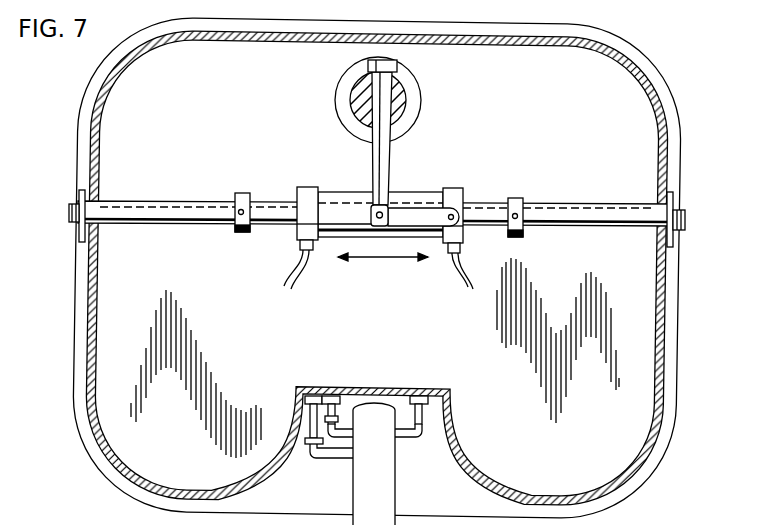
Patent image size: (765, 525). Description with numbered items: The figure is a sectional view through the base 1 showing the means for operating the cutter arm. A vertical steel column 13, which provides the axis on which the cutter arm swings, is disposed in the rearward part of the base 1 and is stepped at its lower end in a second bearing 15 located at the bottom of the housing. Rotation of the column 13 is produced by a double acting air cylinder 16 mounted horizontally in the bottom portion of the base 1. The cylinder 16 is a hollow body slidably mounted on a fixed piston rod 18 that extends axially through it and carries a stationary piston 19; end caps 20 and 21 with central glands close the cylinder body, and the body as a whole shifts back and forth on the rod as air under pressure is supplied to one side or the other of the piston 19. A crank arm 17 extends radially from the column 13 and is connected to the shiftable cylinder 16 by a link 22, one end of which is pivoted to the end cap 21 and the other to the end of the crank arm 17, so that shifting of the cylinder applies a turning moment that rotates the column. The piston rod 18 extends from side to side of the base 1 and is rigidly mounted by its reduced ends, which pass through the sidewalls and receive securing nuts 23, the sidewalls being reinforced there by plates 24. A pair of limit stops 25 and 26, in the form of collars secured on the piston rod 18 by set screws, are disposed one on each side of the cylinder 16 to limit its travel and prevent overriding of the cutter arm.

The base 1 is at (665, 336).
The column 13 is at (405, 100).
The second bearing 15 is at (420, 111).
The air cylinder 16 is at (428, 192).
The crank arm 17 is at (389, 158).
The piston rod 18 is at (548, 208).
The piston 19 is at (370, 200).
The end cap 20 is at (306, 187).
The end cap 21 is at (462, 190).
The link 22 is at (431, 226).
The securing nuts 23 is at (74, 204).
The plates 24 is at (82, 189).
The limit stop 25 is at (240, 193).
The limit stop 26 is at (520, 199).